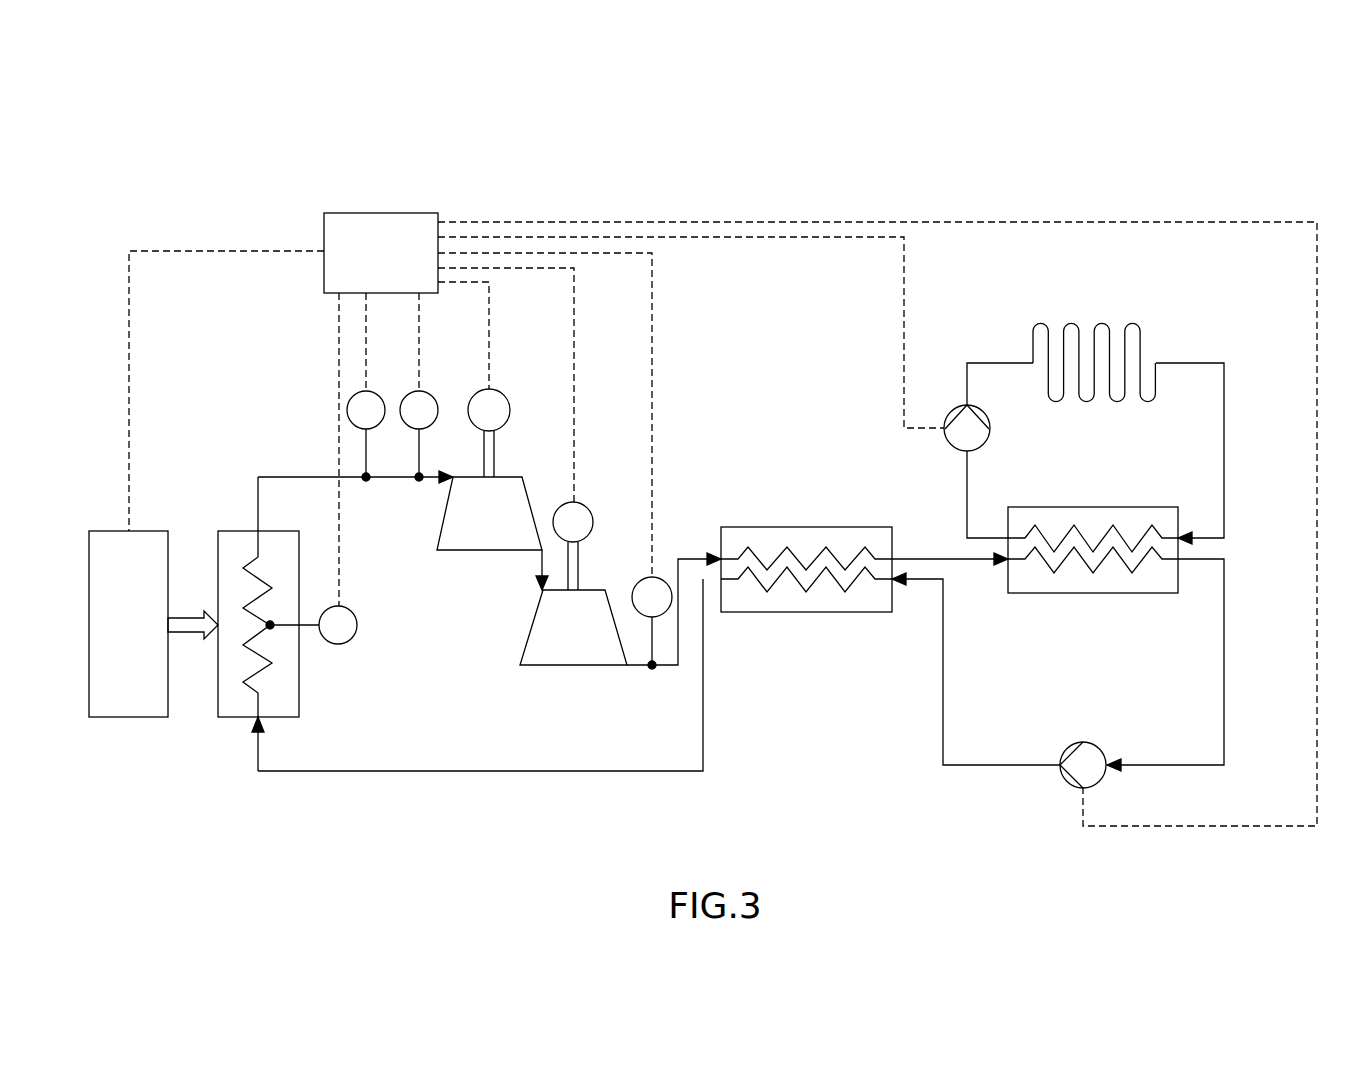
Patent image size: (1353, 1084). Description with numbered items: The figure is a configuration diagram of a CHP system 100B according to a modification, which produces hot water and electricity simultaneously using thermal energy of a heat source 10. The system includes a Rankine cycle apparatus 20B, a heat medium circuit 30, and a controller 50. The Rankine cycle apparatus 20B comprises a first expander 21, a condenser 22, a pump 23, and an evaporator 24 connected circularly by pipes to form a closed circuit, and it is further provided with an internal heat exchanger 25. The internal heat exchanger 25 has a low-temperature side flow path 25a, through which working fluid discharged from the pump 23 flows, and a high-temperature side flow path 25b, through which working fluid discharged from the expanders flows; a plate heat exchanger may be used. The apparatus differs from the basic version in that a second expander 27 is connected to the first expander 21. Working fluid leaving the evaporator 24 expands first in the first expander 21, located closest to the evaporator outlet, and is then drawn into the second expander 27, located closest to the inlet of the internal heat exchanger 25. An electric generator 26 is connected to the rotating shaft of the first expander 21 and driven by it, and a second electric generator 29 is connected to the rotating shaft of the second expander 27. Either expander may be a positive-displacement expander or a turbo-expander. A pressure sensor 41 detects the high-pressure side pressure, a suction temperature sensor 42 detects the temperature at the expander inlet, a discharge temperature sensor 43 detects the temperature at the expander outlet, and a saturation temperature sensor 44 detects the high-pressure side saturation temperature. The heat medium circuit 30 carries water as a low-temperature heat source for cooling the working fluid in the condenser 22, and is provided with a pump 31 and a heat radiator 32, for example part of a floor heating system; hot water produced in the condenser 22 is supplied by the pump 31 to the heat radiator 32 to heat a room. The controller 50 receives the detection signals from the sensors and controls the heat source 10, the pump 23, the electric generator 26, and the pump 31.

The CHP system 100B is at (1163, 170).
The heat source 10 is at (128, 717).
The Rankine cycle apparatus 20B is at (605, 771).
The first expander 21 is at (480, 550).
The condenser 22 is at (1093, 593).
The pump 23 is at (1070, 787).
The evaporator 24 is at (228, 717).
The internal heat exchanger 25 is at (806, 576).
The low-temperature side flow path 25a is at (767, 592).
The high-temperature side flow path 25b is at (826, 547).
The electric generator 26 is at (498, 391).
The second expander 27 is at (592, 665).
The second electric generator 29 is at (565, 503).
The heat medium circuit 30 is at (1226, 447).
The pump 31 is at (950, 452).
The heat radiator 32 is at (1072, 322).
The pressure sensor 41 is at (374, 393).
The suction temperature sensor 42 is at (428, 393).
The discharge temperature sensor 43 is at (664, 580).
The saturation temperature sensor 44 is at (357, 625).
The controller 50 is at (378, 213).